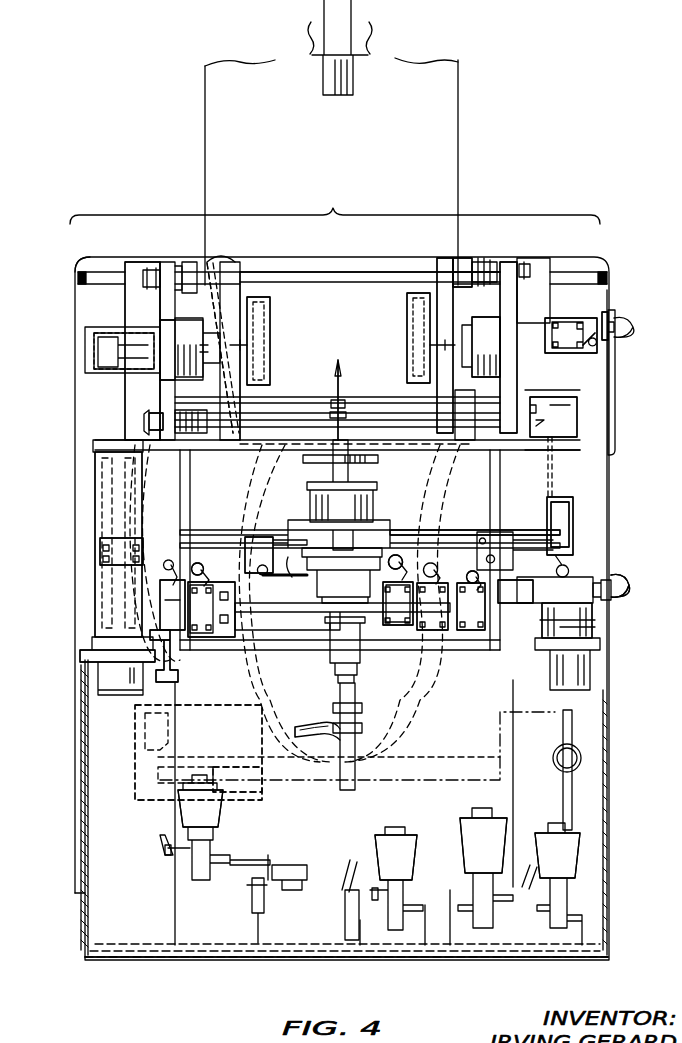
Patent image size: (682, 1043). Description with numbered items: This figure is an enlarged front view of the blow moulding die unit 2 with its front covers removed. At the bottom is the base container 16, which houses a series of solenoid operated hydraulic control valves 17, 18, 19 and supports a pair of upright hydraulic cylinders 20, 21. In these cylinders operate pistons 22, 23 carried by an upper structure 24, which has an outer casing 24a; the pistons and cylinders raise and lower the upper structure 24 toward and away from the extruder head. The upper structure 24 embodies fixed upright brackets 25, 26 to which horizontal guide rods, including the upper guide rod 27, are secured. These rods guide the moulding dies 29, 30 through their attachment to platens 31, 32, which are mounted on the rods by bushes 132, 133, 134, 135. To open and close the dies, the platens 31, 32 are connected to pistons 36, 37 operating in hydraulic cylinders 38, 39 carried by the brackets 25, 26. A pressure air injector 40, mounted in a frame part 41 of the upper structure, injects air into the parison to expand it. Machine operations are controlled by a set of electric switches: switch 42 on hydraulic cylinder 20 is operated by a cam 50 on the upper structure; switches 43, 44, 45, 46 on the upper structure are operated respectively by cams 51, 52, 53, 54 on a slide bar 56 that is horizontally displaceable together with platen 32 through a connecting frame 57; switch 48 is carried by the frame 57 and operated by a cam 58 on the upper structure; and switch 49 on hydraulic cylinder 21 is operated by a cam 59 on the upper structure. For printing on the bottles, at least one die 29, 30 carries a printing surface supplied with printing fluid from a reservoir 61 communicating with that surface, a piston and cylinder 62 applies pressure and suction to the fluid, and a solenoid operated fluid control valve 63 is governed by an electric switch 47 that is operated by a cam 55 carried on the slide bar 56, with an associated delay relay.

The blow moulding die unit 2 is at (538, 702).
The base container 16 is at (114, 958).
The solenoid operated hydraulic control valve 17 is at (182, 812).
The solenoid operated hydraulic control valve 18 is at (410, 858).
The solenoid operated hydraulic control valve 19 is at (470, 850).
The upright hydraulic cylinder 20 is at (92, 621).
The upright hydraulic cylinder 21 is at (593, 628).
The piston 22 is at (106, 500).
The piston 23 is at (603, 443).
The upper structure 24 is at (335, 197).
The outer casing 24a is at (74, 255).
The fixed upright bracket 25 is at (162, 304).
The fixed upright bracket 26 is at (508, 300).
The upper horizontal guide rod 27 is at (305, 270).
The moulding die 29 is at (270, 328).
The moulding die 30 is at (402, 363).
The platen 31 is at (252, 305).
The platen 32 is at (439, 260).
The piston 36 is at (122, 377).
The piston 37 is at (480, 350).
The hydraulic cylinder 38 is at (86, 350).
The hydraulic cylinder 39 is at (521, 326).
The pressure air injector 40 is at (338, 362).
The frame part 41 is at (290, 572).
The electric switch 42 is at (101, 551).
The electric switch 43 is at (166, 598).
The electric switch 44 is at (207, 637).
The electric switch 45 is at (398, 653).
The electric switch 46 is at (434, 635).
The electric switch 47 is at (472, 632).
The electric switch 48 is at (563, 524).
The electric switch 49 is at (585, 355).
The cam 50 is at (175, 685).
The cam 51 is at (222, 560).
The cam 52 is at (258, 537).
The cam 53 is at (440, 554).
The cam 54 is at (476, 569).
The cam 55 is at (522, 603).
The slide bar 56 is at (438, 539).
The connecting frame 57 is at (573, 502).
The cam 58 is at (608, 598).
The cam 59 is at (615, 338).
The reservoir 61 is at (138, 733).
The piston and cylinder 62 is at (242, 797).
The solenoid operated fluid control valve 63 is at (575, 860).
The bush 132 is at (201, 253).
The bush 133 is at (148, 419).
The bush 134 is at (464, 264).
The bush 135 is at (473, 425).